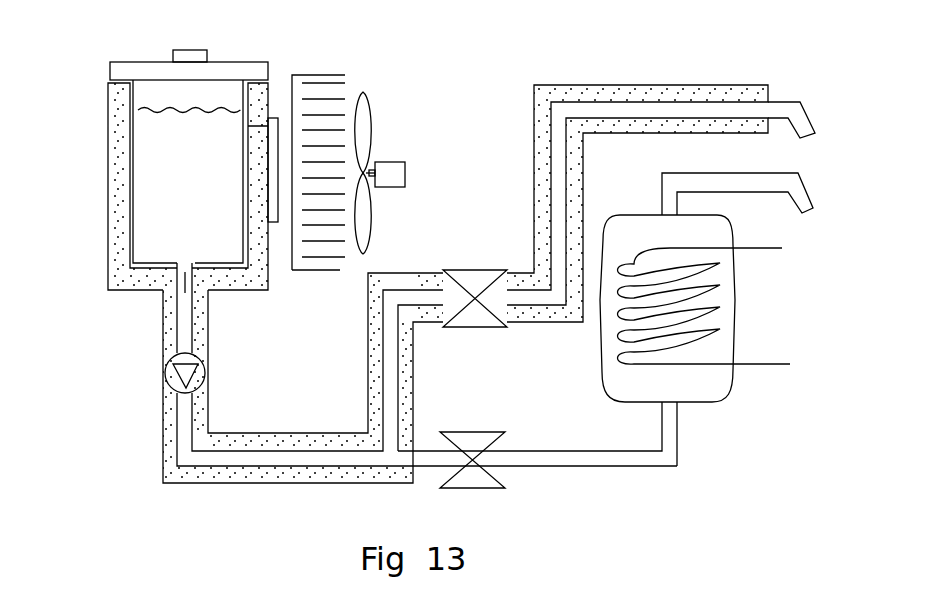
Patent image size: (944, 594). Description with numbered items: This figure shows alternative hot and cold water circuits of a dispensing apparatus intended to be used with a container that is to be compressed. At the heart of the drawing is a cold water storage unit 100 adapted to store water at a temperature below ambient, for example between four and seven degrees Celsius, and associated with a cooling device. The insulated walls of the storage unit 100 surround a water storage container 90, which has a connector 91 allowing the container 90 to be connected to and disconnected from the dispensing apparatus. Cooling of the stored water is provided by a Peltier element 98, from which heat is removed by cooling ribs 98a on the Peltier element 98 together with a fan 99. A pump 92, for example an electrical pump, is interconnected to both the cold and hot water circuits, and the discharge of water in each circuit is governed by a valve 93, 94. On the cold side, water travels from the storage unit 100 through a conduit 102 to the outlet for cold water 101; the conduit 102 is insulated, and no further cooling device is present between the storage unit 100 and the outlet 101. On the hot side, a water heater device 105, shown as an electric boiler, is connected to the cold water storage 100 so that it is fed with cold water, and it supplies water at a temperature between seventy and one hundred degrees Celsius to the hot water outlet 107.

The water storage container 90 is at (133, 162).
The connector 91 is at (185, 280).
The pump 92 is at (218, 346).
The valve 93 is at (478, 417).
The valve 94 is at (482, 340).
The Peltier element 98 is at (274, 118).
The cooling ribs 98a is at (342, 75).
The fan 99 is at (390, 126).
The cold water storage unit 100 is at (94, 177).
The outlet for cold water 101 is at (812, 136).
The conduit 102 is at (577, 85).
The water heater device 105 is at (757, 302).
The hot water outlet 107 is at (807, 211).